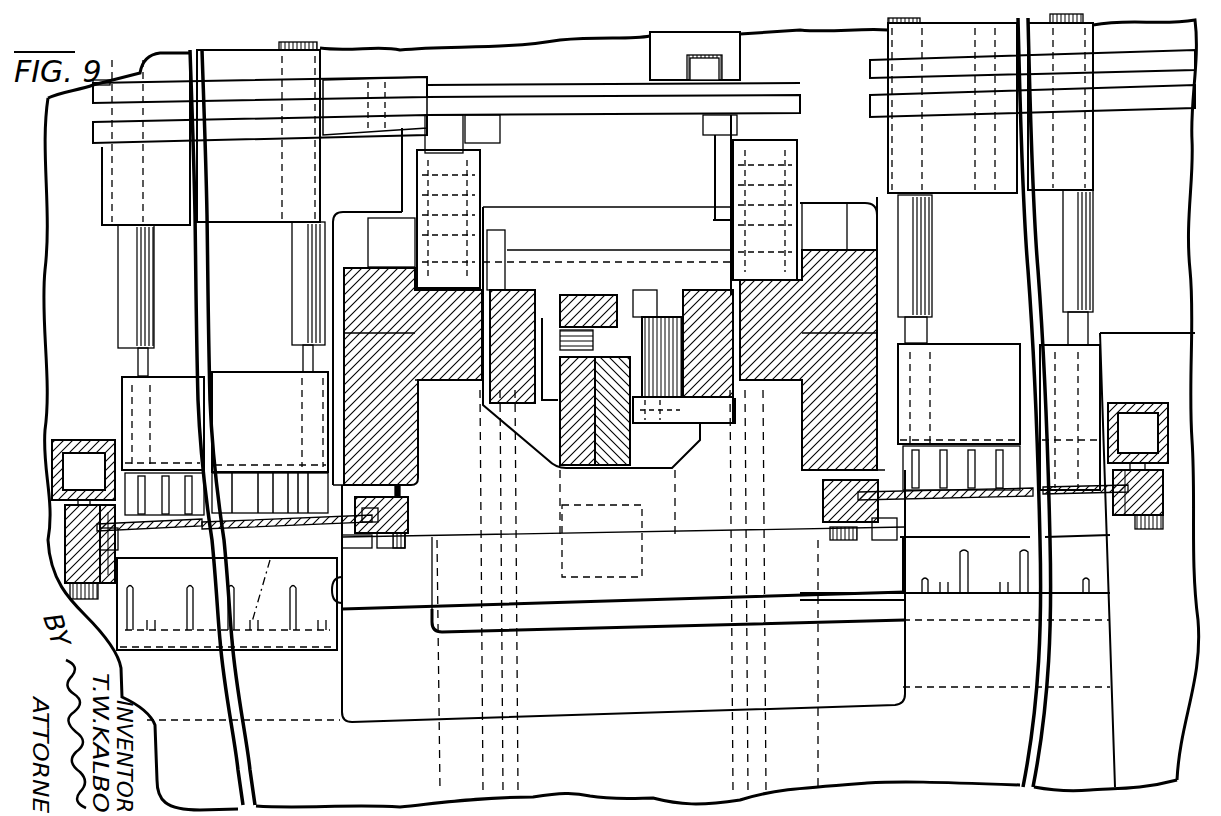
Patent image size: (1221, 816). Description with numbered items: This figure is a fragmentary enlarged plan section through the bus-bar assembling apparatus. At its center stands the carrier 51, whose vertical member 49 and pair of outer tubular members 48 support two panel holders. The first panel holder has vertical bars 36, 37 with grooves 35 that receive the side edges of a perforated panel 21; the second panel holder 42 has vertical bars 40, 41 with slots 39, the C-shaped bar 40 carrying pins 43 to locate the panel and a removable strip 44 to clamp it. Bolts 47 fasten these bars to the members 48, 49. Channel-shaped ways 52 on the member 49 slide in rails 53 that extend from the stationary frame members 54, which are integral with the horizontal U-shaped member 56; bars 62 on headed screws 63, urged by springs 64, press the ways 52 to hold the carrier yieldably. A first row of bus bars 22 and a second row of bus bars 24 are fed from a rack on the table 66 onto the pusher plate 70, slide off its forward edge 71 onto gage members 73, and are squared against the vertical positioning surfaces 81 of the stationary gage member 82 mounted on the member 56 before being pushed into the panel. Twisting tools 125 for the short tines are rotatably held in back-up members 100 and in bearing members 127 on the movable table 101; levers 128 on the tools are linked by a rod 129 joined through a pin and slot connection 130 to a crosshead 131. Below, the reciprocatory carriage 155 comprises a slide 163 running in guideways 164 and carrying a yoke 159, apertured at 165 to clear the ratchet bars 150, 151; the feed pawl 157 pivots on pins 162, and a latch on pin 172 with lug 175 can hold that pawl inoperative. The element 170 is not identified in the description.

The movable table 101 is at (70, 241).
The table 66 is at (1167, 684).
The bearing member 127 is at (158, 187).
The lever 128 is at (353, 128).
The twisting tool 125 is at (133, 308).
The crosshead 131 is at (665, 57).
The pin and slot connection 130 is at (738, 68).
The rod 129 is at (640, 100).
The guideway 164 is at (515, 228).
The headed screw 63 is at (482, 190).
The spring 64 is at (480, 206).
The reciprocatory carriage 155 is at (528, 292).
The bar 62 is at (385, 243).
The channel-shaped way 52 is at (362, 302).
The rail 53 is at (358, 330).
The stationary frame member 54 is at (440, 368).
The vertical member 49 is at (400, 427).
The yoke 159 is at (515, 296).
The feed pawl 157 is at (575, 296).
The lug 175 is at (578, 335).
The ratchet bar 151 is at (577, 448).
The ratchet bar 150 is at (618, 452).
The spring 170 is at (643, 322).
The pin 172 is at (668, 320).
The pin 162 is at (505, 432).
The back-up member 100 is at (265, 392).
The outer tubular member 48 is at (80, 440).
The carrier 51 is at (88, 432).
The second panel holder 42 is at (55, 518).
The vertical bar 40 is at (70, 580).
The bolt 47 is at (80, 598).
The slot 39 is at (112, 545).
The vertical bar 41 is at (410, 502).
The pin 43 is at (140, 528).
The removable strip 44 is at (120, 560).
The perforated panel 21 is at (300, 524).
The second bus bar 24 is at (264, 579).
The vertical bar 37 is at (825, 500).
The groove 35 is at (852, 540).
The vertical bar 36 is at (1162, 500).
The first bus bar 22 is at (1003, 548).
The U-shaped member 56 is at (703, 497).
The aperture 165 is at (548, 508).
The slide 163 is at (548, 585).
The stationary gage member 82 is at (623, 596).
The pusher plate 70 is at (665, 740).
The vertical positioning surface 81 is at (335, 577).
The gage member 73 is at (273, 618).
The forward edge 71 is at (172, 633).